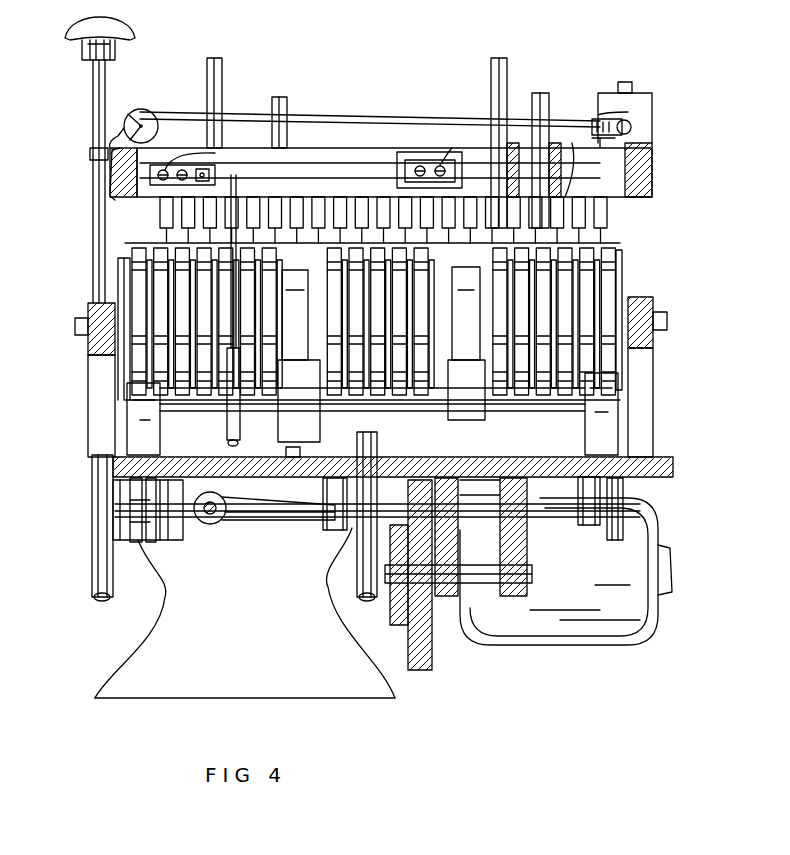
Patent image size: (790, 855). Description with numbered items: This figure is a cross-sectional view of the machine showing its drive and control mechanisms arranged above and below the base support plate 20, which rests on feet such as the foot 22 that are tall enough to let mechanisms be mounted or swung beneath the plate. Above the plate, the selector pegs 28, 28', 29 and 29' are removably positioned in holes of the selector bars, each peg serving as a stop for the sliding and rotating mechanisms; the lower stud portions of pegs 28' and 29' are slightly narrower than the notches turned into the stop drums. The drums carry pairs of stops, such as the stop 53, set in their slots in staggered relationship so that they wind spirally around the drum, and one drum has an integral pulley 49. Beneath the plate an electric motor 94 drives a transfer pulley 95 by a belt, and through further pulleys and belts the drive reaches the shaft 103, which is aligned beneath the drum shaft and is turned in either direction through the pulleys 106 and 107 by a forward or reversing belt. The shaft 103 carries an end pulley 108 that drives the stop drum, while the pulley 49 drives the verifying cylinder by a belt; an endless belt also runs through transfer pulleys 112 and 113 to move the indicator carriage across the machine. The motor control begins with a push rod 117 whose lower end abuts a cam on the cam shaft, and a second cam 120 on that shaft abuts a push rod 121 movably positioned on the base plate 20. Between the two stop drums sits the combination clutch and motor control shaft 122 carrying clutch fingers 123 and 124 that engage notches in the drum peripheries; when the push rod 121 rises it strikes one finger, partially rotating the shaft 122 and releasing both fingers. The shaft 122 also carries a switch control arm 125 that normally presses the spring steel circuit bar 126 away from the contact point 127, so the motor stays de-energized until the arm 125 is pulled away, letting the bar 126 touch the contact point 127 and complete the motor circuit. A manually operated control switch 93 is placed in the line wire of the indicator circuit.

The base support plate 20 is at (672, 458).
The foot 22 is at (245, 633).
The selector peg 28 is at (301, 110).
The selector peg 28' is at (239, 103).
The selector peg 29 is at (518, 142).
The selector peg 29' is at (564, 148).
The pulley 49 is at (288, 210).
The stop 53 is at (132, 250).
The manually operated control switch 93 is at (635, 90).
The electric motor 94 is at (655, 645).
The transfer pulley 95 is at (432, 668).
The shaft 103 is at (304, 518).
The pulley 106 is at (357, 590).
The pulley 107 is at (92, 585).
The end pulley 108 is at (150, 540).
The transfer pulley 112 is at (141, 109).
The transfer pulley 113 is at (592, 138).
The push rod 117 is at (93, 102).
The cam 120 is at (226, 500).
The push rod 121 is at (300, 450).
The combination clutch and motor control shaft 122 is at (208, 411).
The clutch finger 123 is at (318, 428).
The clutch finger 124 is at (470, 414).
The switch control arm 125 is at (237, 195).
The spring steel circuit bar 126 is at (300, 178).
The contact point 127 is at (165, 168).